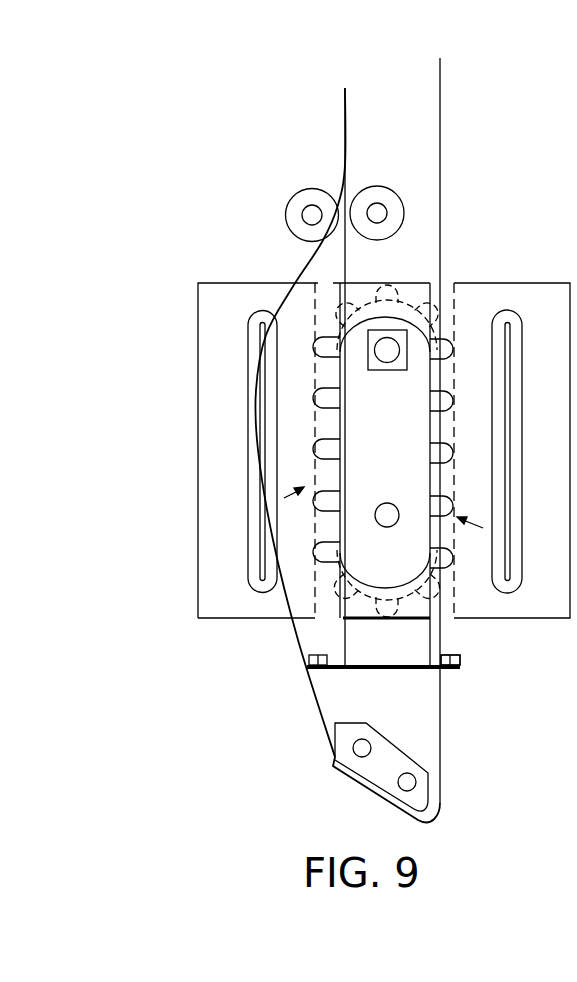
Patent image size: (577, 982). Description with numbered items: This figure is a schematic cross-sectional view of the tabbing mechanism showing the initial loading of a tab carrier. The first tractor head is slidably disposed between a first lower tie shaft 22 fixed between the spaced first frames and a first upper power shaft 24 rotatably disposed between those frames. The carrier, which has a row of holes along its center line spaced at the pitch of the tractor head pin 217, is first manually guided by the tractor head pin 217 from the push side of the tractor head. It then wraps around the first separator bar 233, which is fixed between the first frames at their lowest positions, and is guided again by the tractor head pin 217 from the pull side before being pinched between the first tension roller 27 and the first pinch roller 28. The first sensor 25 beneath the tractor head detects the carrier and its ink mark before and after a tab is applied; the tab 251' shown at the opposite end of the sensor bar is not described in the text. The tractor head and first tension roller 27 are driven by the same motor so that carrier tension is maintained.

The first lower tie shaft 22 is at (387, 502).
The first upper power shaft 24 is at (392, 348).
The first tension roller 27 is at (385, 202).
The first pinch roller 28 is at (297, 207).
The tractor head pin 217 is at (447, 348).
The first sensor 25 is at (308, 660).
The stop bar tab 251' is at (495, 669).
The first separator bar 233 is at (382, 773).